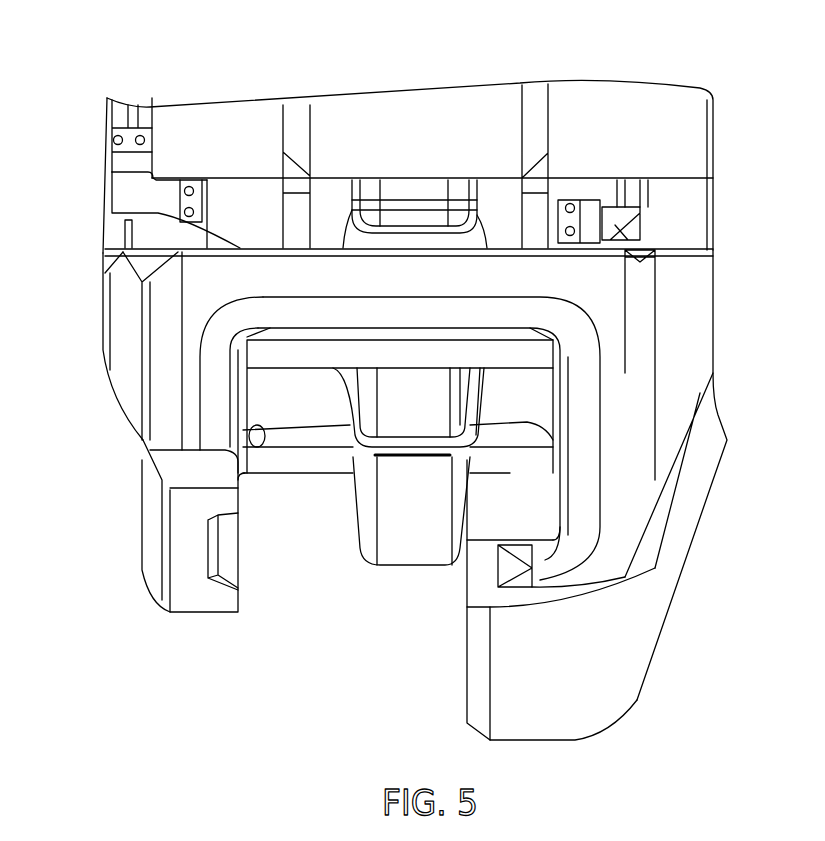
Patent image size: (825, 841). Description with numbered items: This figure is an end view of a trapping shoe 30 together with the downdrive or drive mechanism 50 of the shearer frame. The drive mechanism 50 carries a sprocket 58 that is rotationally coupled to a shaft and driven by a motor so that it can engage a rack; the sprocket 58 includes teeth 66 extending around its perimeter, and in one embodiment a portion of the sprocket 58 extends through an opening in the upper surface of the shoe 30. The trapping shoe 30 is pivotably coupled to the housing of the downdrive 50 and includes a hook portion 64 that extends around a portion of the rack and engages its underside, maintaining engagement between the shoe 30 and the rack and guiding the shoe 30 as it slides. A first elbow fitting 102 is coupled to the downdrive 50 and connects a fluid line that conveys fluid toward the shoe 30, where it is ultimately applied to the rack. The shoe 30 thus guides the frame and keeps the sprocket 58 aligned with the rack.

The drive mechanism 50 is at (640, 118).
The first elbow fitting 102 is at (613, 217).
The trapping shoe 30 is at (678, 405).
The teeth 66 is at (383, 520).
The sprocket 58 is at (333, 549).
The hook portion 64 is at (483, 673).